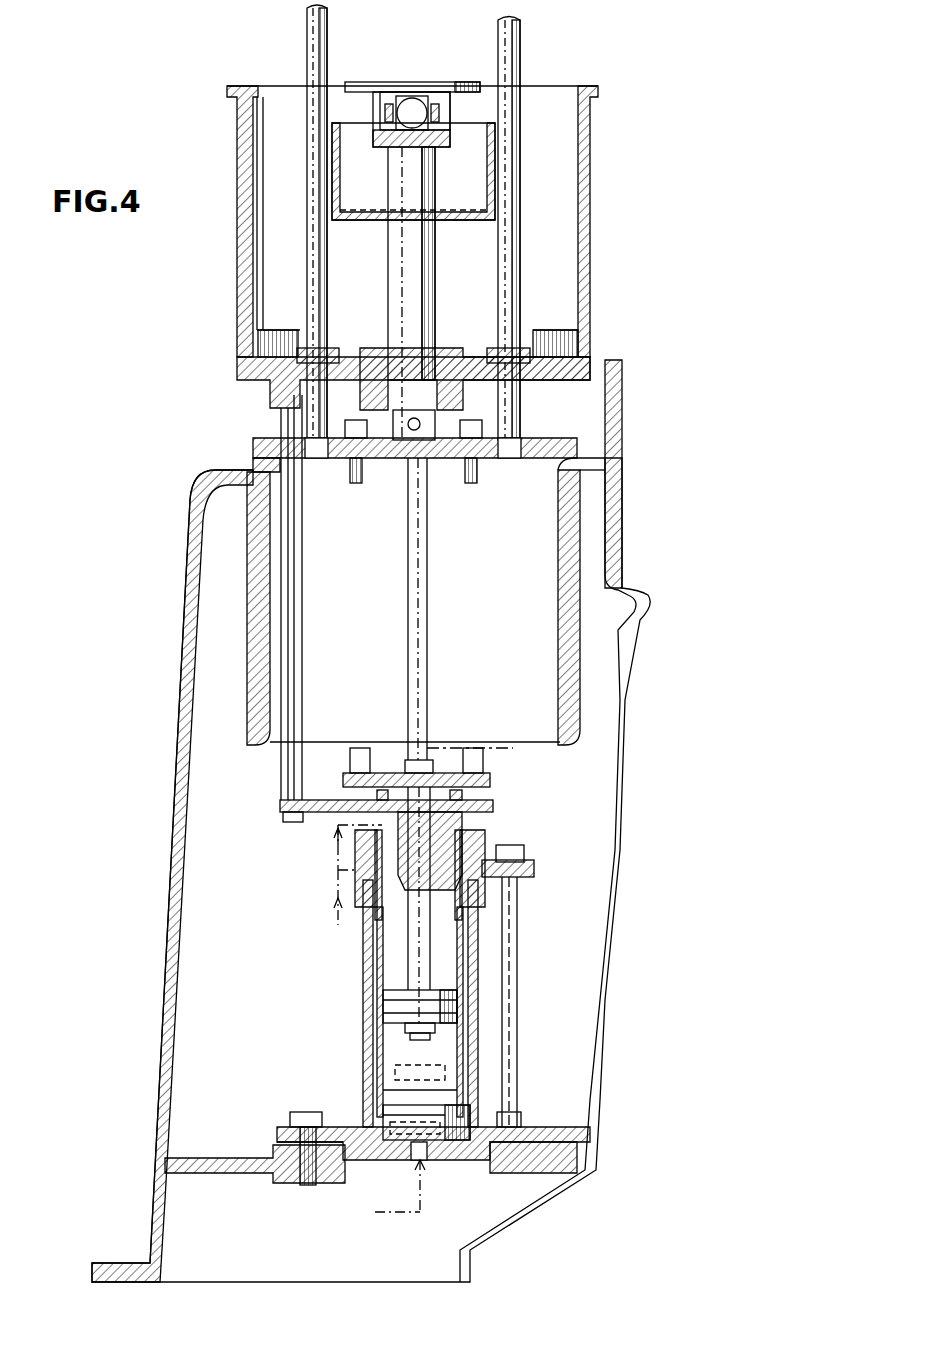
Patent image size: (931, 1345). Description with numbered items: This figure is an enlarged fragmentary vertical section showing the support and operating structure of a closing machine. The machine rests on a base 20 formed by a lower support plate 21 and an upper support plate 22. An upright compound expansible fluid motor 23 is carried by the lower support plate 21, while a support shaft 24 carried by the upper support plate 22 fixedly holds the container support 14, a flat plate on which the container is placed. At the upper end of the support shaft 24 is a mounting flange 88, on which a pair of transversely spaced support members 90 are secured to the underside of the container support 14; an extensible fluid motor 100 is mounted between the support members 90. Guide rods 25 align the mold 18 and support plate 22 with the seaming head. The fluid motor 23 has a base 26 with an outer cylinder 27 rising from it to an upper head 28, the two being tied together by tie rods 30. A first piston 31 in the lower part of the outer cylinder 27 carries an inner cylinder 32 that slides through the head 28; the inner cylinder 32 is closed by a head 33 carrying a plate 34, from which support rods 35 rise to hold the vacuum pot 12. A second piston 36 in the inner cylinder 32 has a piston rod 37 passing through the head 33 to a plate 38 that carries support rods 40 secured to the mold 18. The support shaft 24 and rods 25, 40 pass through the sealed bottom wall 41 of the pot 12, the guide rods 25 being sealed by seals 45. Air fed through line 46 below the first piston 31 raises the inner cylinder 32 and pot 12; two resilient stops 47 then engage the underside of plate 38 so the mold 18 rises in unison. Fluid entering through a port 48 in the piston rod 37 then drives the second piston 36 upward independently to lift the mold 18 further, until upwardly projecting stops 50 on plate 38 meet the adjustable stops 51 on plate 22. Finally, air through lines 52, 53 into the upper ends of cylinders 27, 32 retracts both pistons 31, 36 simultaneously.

The vacuum pot 12 is at (592, 228).
The container support 14 is at (397, 82).
The mold 18 is at (362, 215).
The base 20 is at (165, 935).
The lower support plate 21 is at (213, 1158).
The upper support plate 22 is at (540, 460).
The compound expansible fluid motor 23 is at (381, 1003).
The support shaft 24 is at (435, 275).
The guide rods 25 is at (307, 38).
The base 26 is at (460, 1160).
The outer cylinder 27 is at (352, 984).
The upper head 28 is at (515, 852).
The tie rods 30 is at (520, 950).
The first piston 31 is at (380, 1122).
The inner cylinder 32 is at (363, 937).
The head 33 is at (475, 822).
The plate 34 is at (305, 818).
The support rods 35 is at (281, 760).
The second piston 36 is at (388, 1010).
The piston rod 37 is at (408, 957).
The plate 38 is at (505, 770).
The support rods 40 is at (408, 658).
The bottom wall 41 is at (538, 372).
The seals 45 is at (298, 348).
The line 46 is at (415, 1203).
The resilient stops 47 is at (362, 790).
The port 48 is at (415, 760).
The stops 50 is at (350, 752).
The adjustable stops 51 is at (357, 484).
The line 52 is at (336, 872).
The line 53 is at (338, 835).
The mounting flange 88 is at (440, 142).
The support members 90 is at (380, 96).
The extensible fluid motor 100 is at (410, 125).